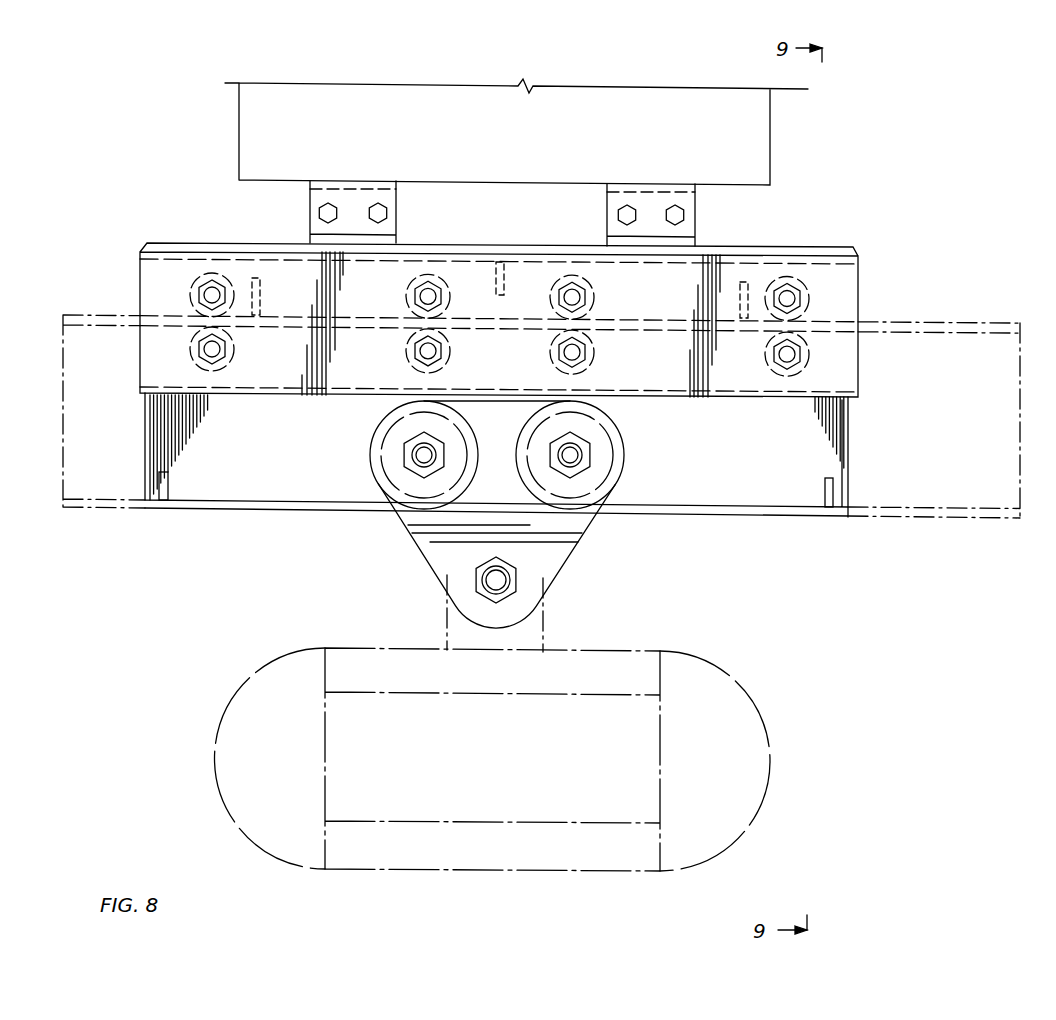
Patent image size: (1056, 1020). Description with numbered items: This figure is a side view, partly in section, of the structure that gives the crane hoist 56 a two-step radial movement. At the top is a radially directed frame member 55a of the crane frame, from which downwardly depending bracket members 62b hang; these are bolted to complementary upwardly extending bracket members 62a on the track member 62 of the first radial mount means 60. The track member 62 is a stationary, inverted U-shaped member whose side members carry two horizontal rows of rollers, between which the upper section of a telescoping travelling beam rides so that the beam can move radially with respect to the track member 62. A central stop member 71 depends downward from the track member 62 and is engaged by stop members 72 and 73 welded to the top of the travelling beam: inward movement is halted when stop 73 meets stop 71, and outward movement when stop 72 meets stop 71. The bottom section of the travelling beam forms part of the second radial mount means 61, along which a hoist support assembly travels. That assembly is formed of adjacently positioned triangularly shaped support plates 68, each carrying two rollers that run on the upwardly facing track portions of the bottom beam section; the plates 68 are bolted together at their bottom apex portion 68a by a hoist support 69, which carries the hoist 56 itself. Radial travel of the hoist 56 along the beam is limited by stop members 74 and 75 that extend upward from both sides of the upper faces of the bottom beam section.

The radially directed frame member 55a is at (758, 137).
The hoist 56 is at (758, 730).
The first radial mount means 60 is at (893, 270).
The second radial mount means 61 is at (768, 527).
The track member 62 is at (830, 247).
The upwardly extending bracket member 62a is at (397, 238).
The downwardly depending bracket member 62b is at (310, 207).
The triangularly shaped support plate 68 is at (582, 540).
The bottom apex portion 68a is at (468, 606).
The hoist support 69 is at (520, 585).
The central stop member 71 is at (500, 296).
The stop member 72 is at (258, 300).
The stop member 73 is at (748, 318).
The stop member 74 is at (170, 486).
The stop member 75 is at (830, 495).